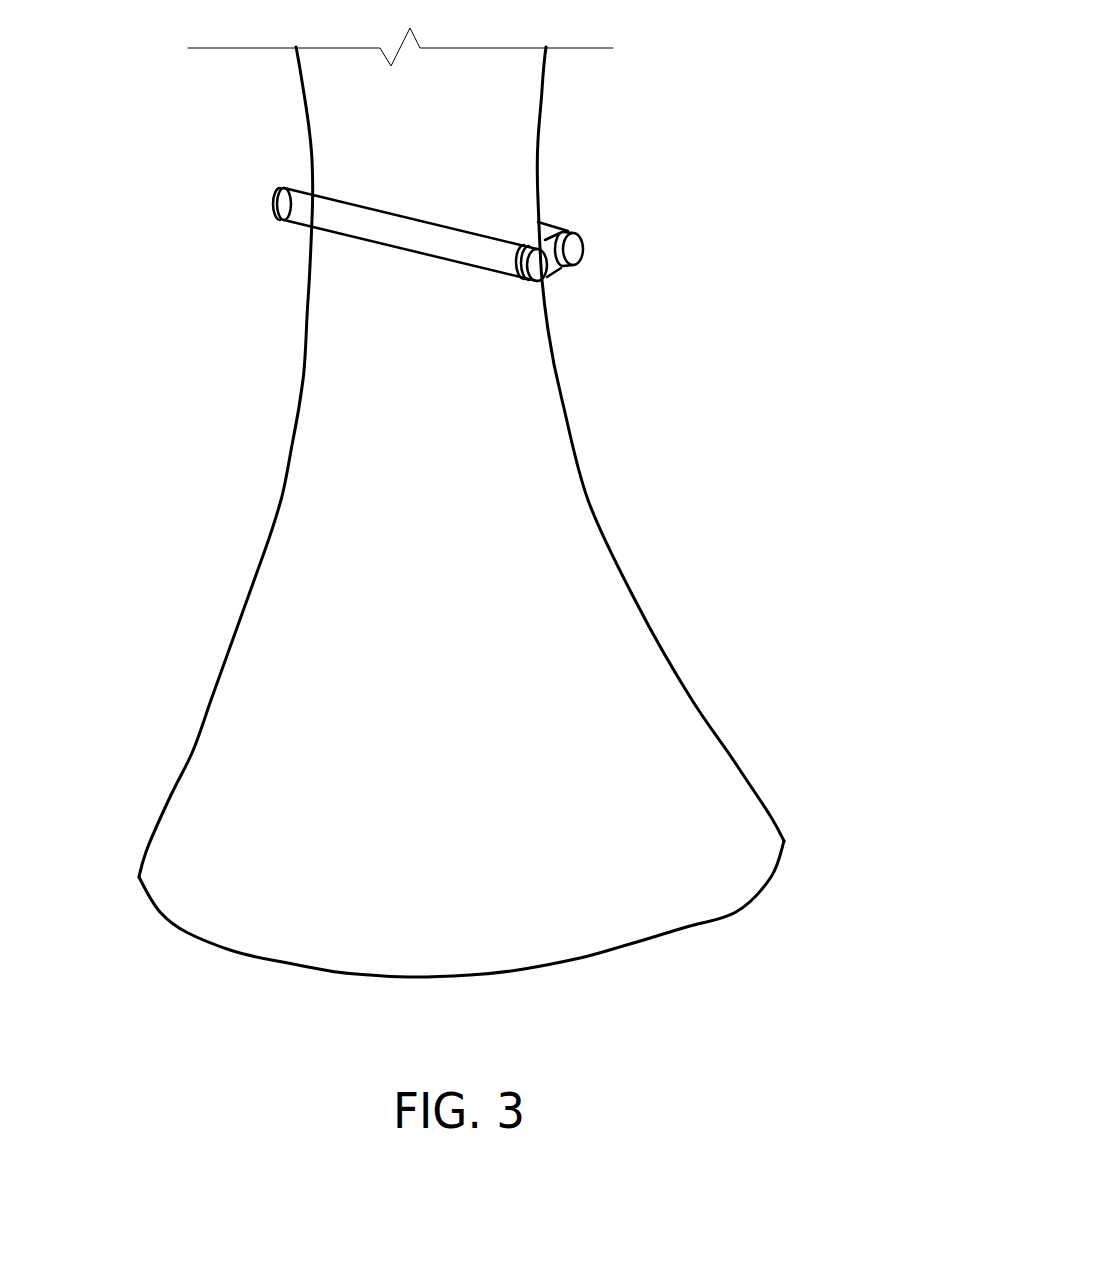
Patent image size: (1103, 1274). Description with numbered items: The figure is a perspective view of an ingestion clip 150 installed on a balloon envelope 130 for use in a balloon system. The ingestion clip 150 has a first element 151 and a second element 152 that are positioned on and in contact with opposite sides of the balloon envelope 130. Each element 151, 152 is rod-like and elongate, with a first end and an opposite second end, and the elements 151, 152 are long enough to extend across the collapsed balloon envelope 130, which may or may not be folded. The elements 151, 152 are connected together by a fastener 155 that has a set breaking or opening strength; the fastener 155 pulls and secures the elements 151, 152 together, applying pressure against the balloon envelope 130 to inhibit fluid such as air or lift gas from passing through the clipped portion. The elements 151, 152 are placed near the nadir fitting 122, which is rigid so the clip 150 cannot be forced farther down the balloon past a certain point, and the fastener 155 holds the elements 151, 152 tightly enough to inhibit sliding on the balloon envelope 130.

The balloon envelope 130 is at (545, 139).
The nadir fitting 122 is at (662, 944).
The ingestion clip 150 is at (402, 257).
The first element 151 is at (540, 230).
The second element 152 is at (495, 276).
The fastener 155 is at (557, 272).